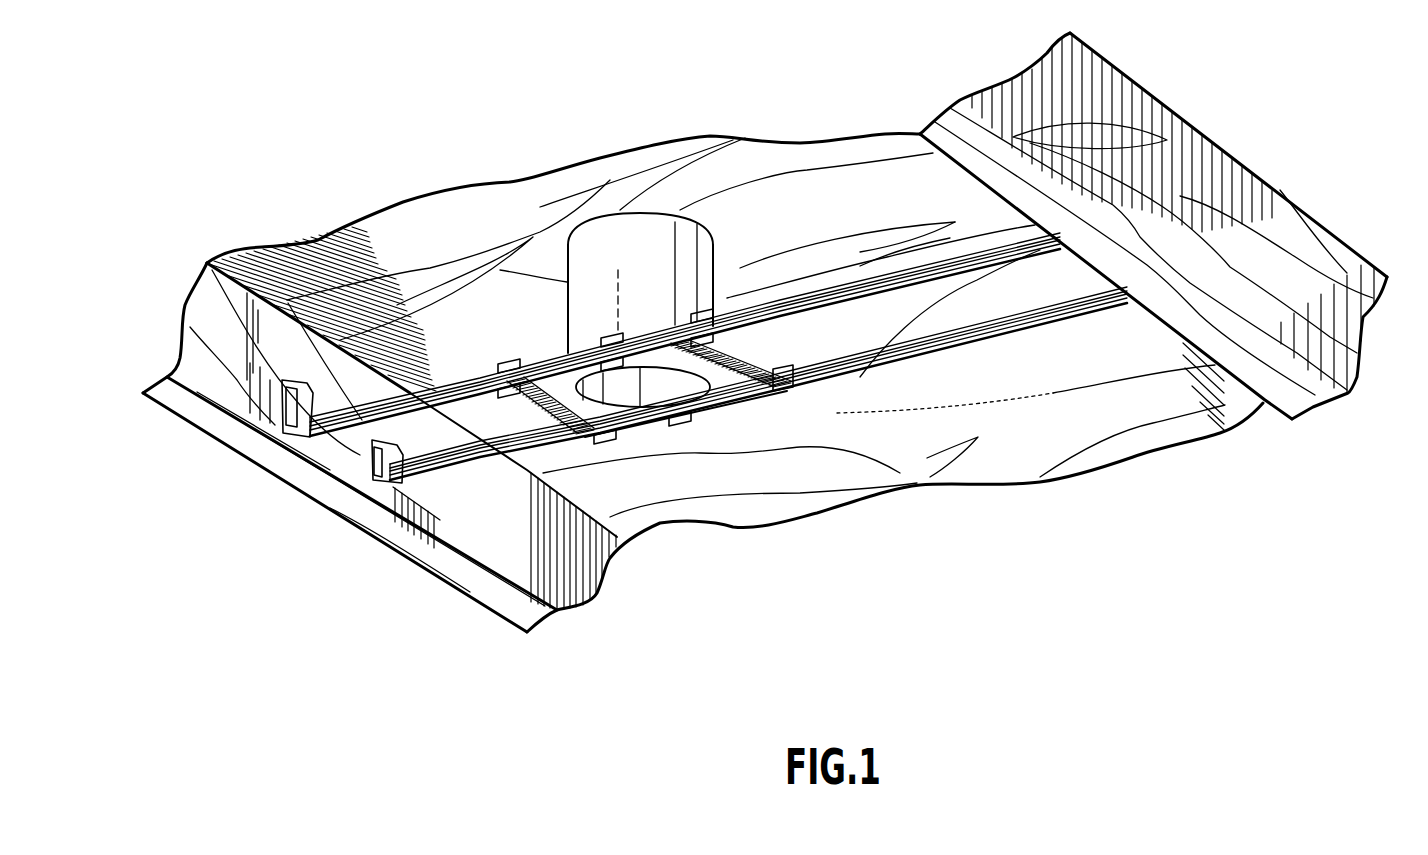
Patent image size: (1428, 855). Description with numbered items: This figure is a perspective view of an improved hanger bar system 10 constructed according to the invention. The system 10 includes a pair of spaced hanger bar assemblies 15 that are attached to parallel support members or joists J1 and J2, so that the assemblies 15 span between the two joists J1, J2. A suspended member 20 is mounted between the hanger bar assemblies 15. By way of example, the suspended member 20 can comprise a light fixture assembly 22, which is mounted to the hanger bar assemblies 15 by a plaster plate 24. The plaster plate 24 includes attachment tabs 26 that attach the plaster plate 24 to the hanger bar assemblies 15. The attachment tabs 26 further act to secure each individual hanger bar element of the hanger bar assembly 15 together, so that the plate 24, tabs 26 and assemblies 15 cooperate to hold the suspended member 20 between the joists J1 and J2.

The floor system 10 is at (327, 583).
The hanger bar assemblies 15 is at (935, 265).
The suspended member 20 is at (668, 441).
The light fixture assembly 22 is at (640, 237).
The plaster plate 24 is at (745, 378).
The attachment tabs 26 is at (508, 368).
The joist J1 is at (233, 417).
The joist J2 is at (1290, 383).